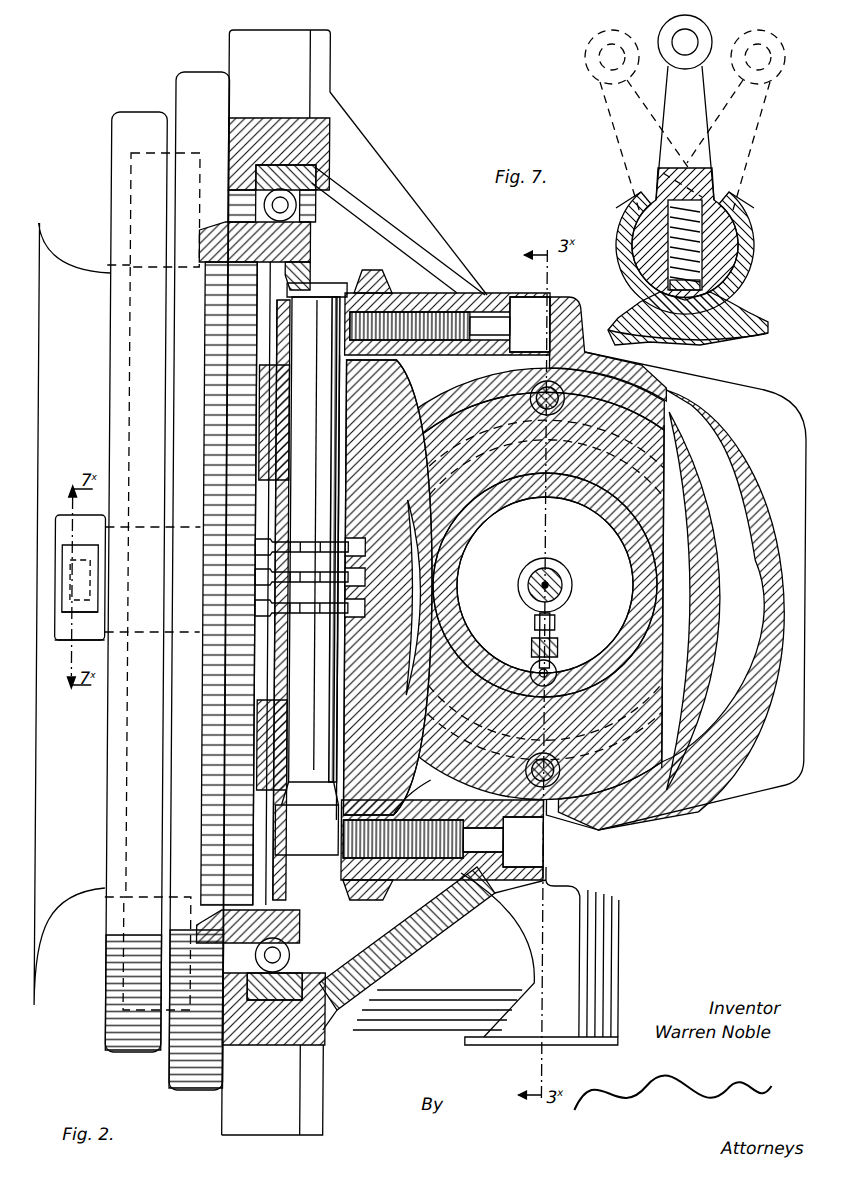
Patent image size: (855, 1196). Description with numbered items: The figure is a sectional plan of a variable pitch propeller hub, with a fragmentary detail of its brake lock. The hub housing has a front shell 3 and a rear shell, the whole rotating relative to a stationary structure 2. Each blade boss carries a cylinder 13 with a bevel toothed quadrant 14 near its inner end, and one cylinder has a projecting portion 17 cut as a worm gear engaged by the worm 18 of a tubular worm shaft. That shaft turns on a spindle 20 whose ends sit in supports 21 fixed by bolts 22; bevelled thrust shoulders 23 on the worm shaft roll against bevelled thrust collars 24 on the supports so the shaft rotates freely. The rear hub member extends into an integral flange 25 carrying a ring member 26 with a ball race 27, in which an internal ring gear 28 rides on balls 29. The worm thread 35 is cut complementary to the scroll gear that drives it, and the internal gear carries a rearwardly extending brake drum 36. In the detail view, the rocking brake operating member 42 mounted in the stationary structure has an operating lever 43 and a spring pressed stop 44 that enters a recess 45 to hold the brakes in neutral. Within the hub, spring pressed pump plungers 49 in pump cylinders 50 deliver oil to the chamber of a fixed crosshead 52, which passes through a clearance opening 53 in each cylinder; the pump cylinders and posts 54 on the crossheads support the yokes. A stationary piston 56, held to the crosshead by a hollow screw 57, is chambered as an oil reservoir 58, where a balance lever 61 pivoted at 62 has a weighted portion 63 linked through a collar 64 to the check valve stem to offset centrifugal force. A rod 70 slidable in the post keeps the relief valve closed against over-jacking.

In FIG. 7, the stationary structure 2 is at (742, 318).
In FIG. 2, the stationary structure 2 is at (112, 945).
In FIG. 2, the front shell 3 is at (673, 790).
In FIG. 2, the cylinder 13 is at (703, 545).
In FIG. 2, the bevel toothed quadrant 14 is at (385, 702).
In FIG. 2, the projecting portion 17 is at (380, 520).
In FIG. 2, the worm 18 is at (307, 742).
In FIG. 2, the spindle 20 is at (315, 532).
In FIG. 2, the support 21 is at (410, 290).
In FIG. 2, the bolt 22 is at (462, 283).
In FIG. 2, the bevelled thrust shoulder 23 is at (362, 380).
In FIG. 2, the bevelled thrust collar 24 is at (372, 272).
In FIG. 2, the integral flange 25 is at (322, 77).
In FIG. 2, the ring member 26 is at (234, 52).
In FIG. 2, the ball race 27 is at (313, 165).
In FIG. 2, the internal ring gear 28 is at (308, 238).
In FIG. 2, the balls 29 is at (310, 193).
In FIG. 2, the worm thread 35 is at (306, 570).
In FIG. 2, the brake drum 36 is at (116, 1035).
In FIG. 7, the rocking brake operating member 42 is at (752, 232).
In FIG. 2, the rocking brake operating member 42 is at (73, 648).
In FIG. 7, the operating lever 43 is at (700, 95).
In FIG. 2, the operating lever 43 is at (62, 565).
In FIG. 7, the spring pressed stop 44 is at (668, 240).
In FIG. 7, the recess 45 is at (640, 304).
In FIG. 2, the pump plunger 49 is at (603, 828).
In FIG. 2, the pump cylinder 50 is at (562, 770).
In FIG. 2, the fixed crosshead 52 is at (653, 437).
In FIG. 2, the clearance opening 53 is at (672, 486).
In FIG. 2, the post 54 is at (562, 397).
In FIG. 2, the stationary piston 56 is at (448, 598).
In FIG. 2, the hollow screw 57 is at (545, 570).
In FIG. 2, the oil reservoir 58 is at (544, 585).
In FIG. 2, the balance lever 61 is at (552, 640).
In FIG. 2, the pivot 62 is at (558, 650).
In FIG. 2, the weighted portion 63 is at (557, 620).
In FIG. 2, the collar 64 is at (537, 664).
In FIG. 2, the rod 70 is at (569, 351).